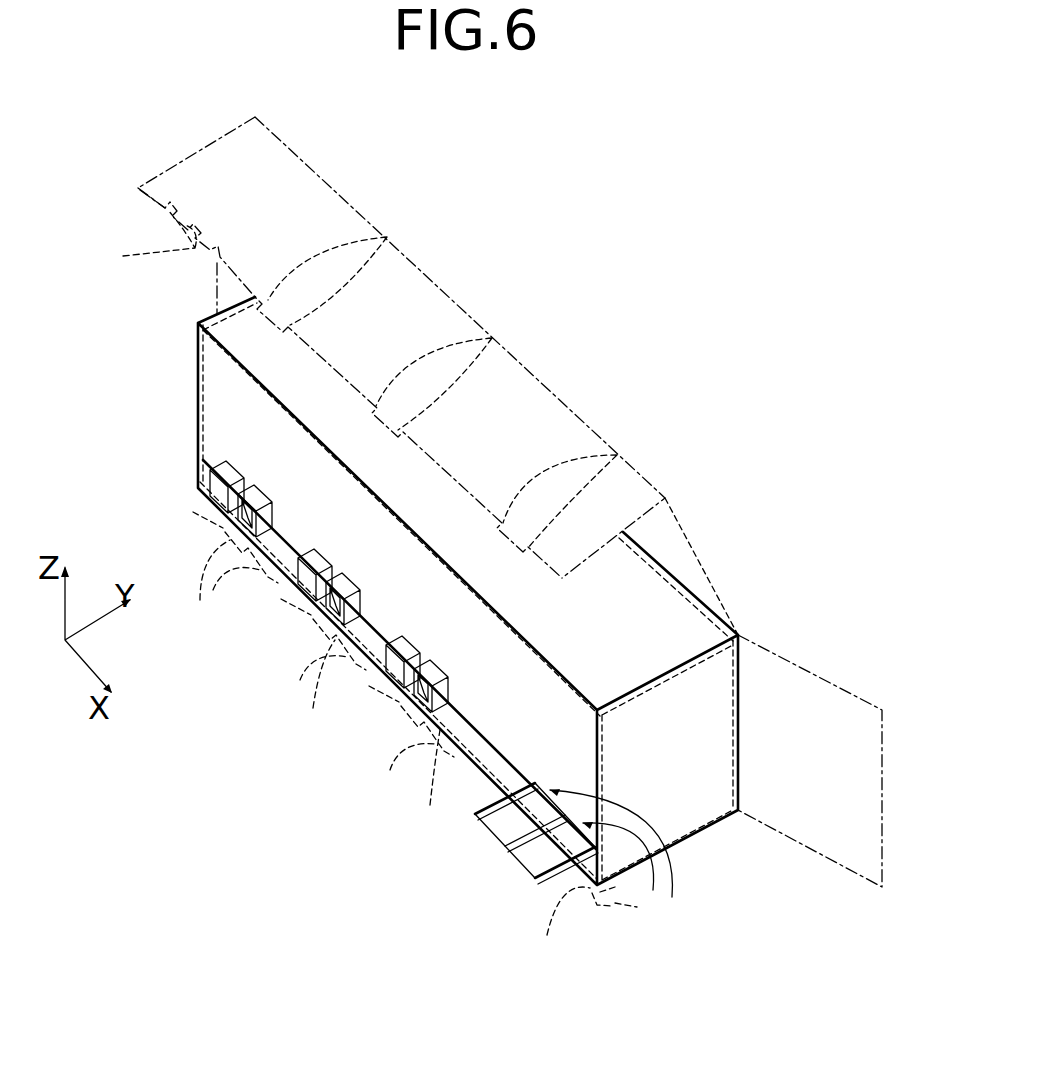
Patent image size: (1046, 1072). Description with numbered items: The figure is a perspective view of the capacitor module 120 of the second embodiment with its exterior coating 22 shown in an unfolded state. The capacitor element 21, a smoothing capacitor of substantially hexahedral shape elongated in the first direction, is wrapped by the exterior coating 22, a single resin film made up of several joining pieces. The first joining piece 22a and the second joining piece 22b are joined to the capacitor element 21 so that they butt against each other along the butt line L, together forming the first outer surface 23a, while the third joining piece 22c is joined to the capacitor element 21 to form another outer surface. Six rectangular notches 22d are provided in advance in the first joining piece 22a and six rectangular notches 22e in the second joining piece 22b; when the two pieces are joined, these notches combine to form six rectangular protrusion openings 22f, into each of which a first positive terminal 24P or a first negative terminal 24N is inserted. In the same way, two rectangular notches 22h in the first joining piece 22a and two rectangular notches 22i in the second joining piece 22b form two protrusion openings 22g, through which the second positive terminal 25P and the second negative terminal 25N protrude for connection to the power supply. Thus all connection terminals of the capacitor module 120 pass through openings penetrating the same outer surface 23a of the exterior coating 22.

The capacitor module 120 is at (584, 366).
The capacitor element 21 is at (650, 590).
The exterior coating 22 is at (327, 180).
The first joining piece 22a is at (203, 182).
The second joining piece 22b is at (613, 910).
The third joining piece 22c is at (813, 820).
The rectangular notches 22d is at (387, 237).
The rectangular notches 22e is at (314, 677).
The protrusion openings 22f is at (272, 520).
The protrusion openings 22g is at (627, 864).
The rectangular notches 22h is at (617, 455).
The rectangular notches 22i is at (557, 867).
The first outer surface 23a is at (220, 382).
The first positive terminal 24P is at (222, 503).
The first negative terminal 24N is at (250, 533).
The second positive terminal 25P is at (476, 815).
The second negative terminal 25N is at (505, 840).
The butt line L is at (200, 444).